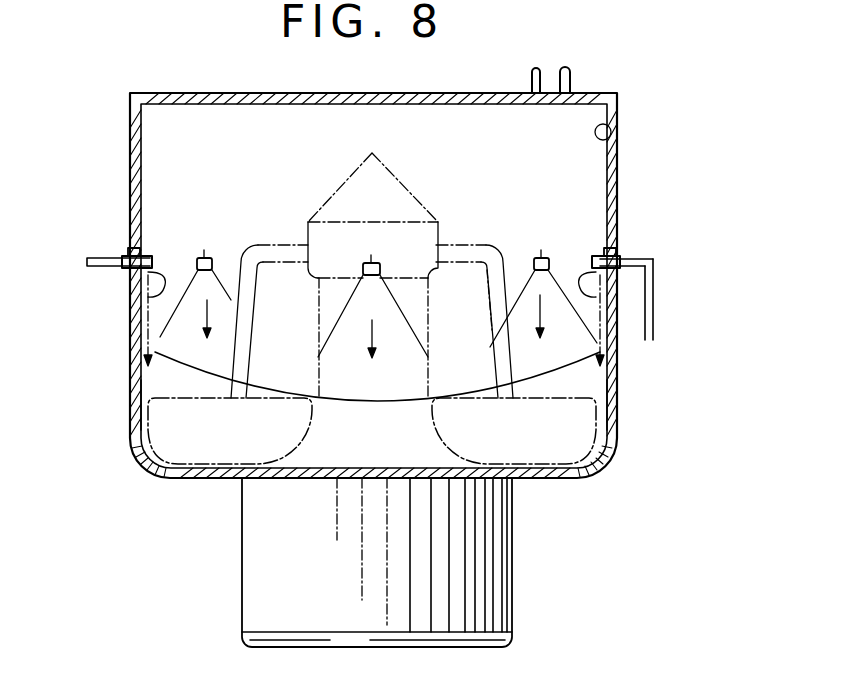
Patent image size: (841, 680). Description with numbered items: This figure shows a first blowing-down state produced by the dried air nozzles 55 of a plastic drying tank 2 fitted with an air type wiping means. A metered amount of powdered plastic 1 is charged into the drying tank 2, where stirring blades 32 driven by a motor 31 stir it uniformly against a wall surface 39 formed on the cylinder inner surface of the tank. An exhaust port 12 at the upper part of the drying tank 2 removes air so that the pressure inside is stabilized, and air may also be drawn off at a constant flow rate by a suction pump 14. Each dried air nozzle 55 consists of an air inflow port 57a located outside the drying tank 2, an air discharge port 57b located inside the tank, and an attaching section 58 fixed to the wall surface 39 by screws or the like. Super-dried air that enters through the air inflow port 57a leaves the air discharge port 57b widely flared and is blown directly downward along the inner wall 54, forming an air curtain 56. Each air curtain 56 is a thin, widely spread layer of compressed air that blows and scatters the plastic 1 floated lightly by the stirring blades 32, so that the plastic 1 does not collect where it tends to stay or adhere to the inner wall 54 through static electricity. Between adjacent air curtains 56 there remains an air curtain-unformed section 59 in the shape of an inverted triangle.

The plastic 1 is at (616, 408).
The drying tank 2 is at (620, 168).
The exhaust port 12 is at (552, 77).
The suction pump 14 is at (283, 290).
The motor 31 is at (512, 555).
The stirring blades 32 is at (178, 435).
The wall surface 39 is at (135, 393).
The inner wall 54 is at (611, 136).
The dried air nozzle 55 is at (370, 255).
The air curtain 56 is at (140, 346).
The air inflow port 57a is at (117, 273).
The air discharge port 57b is at (133, 302).
The attaching section 58 is at (128, 248).
The air curtain-unformed section 59 is at (468, 287).